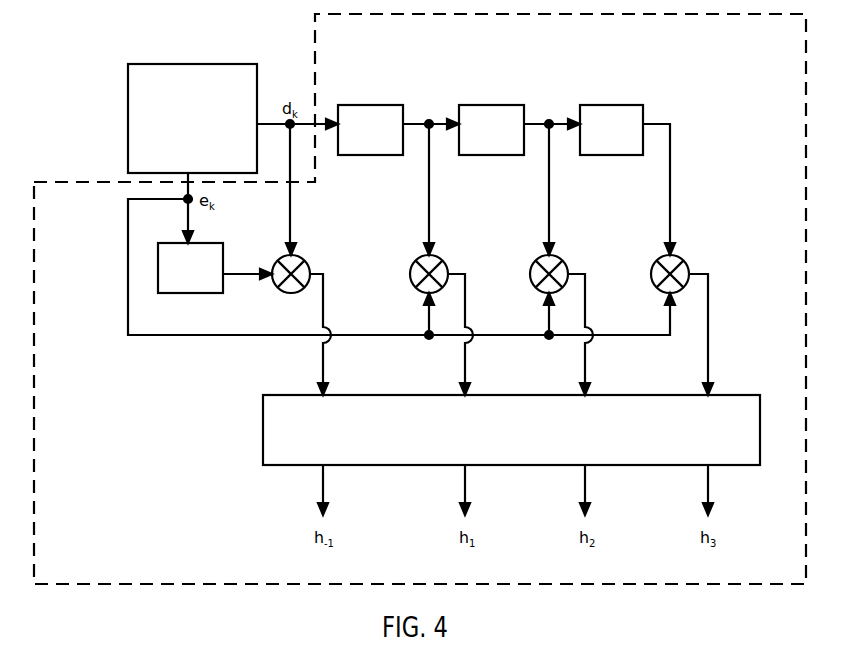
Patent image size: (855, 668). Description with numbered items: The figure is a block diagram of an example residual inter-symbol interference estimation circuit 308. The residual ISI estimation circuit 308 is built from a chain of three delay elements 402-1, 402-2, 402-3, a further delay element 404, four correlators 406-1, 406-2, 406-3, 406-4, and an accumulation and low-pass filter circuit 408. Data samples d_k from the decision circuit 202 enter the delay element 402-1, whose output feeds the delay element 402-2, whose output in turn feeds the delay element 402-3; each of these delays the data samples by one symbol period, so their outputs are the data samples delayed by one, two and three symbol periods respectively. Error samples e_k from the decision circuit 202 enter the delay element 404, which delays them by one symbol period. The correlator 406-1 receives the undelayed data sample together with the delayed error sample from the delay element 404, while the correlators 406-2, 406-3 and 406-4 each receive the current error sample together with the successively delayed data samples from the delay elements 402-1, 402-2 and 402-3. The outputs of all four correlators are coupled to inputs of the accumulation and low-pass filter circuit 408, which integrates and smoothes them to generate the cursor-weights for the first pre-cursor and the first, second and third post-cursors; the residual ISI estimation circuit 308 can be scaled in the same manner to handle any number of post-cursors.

The decision circuit 202 is at (205, 140).
The residual ISI estimation circuit 308 is at (118, 574).
The delay element 402-1 is at (367, 105).
The delay element 402-2 is at (488, 105).
The delay element 402-3 is at (605, 105).
The delay element 404 is at (158, 271).
The correlator 406-1 is at (302, 258).
The correlator 406-2 is at (440, 258).
The correlator 406-3 is at (560, 258).
The correlator 406-4 is at (681, 258).
The accumulation and low-pass filter circuit 408 is at (652, 440).